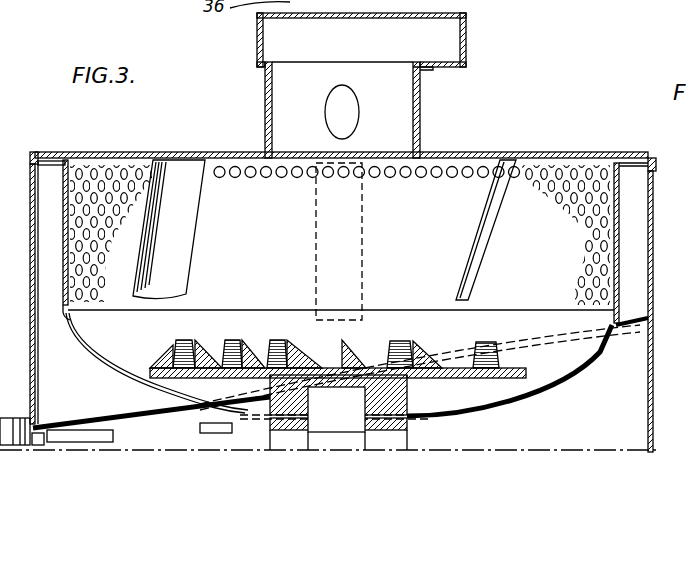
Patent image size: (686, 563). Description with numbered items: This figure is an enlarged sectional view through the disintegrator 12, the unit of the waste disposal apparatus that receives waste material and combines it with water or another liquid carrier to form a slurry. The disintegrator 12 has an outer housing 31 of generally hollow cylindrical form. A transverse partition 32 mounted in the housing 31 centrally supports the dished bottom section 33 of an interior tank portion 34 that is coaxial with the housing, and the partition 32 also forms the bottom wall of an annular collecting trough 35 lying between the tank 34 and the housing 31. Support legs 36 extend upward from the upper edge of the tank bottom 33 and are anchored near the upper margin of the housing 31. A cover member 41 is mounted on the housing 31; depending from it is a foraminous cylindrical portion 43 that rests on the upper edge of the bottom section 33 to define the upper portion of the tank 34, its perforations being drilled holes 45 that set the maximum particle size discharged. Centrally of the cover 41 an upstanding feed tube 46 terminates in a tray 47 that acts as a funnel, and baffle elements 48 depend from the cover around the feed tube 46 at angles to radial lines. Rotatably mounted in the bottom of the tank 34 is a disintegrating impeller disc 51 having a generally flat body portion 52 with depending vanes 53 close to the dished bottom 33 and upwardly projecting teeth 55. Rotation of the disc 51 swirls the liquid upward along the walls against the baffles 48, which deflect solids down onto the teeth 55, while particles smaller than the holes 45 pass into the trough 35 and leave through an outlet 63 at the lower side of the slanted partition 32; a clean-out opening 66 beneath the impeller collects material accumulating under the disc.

The disintegrator 12 is at (146, 149).
The outer housing 31 is at (32, 228).
The transverse partition 32 is at (628, 333).
The dished bottom section 33 is at (98, 363).
The interior tank portion 34 is at (545, 390).
The annular collecting trough 35 is at (48, 254).
The support legs 36 is at (62, 180).
The cover member 41 is at (480, 155).
The foraminous cylindrical portion 43 is at (92, 152).
The drilled holes 45 is at (135, 180).
The feed tube 46 is at (265, 104).
The tray 47 is at (467, 40).
The baffle elements 48 is at (222, 216).
The disintegrating impeller disc 51 is at (265, 352).
The body portion 52 is at (150, 372).
The depending vanes 53 is at (195, 400).
The teeth 55 is at (230, 343).
The outlet 63 is at (106, 436).
The clean-out opening 66 is at (210, 432).